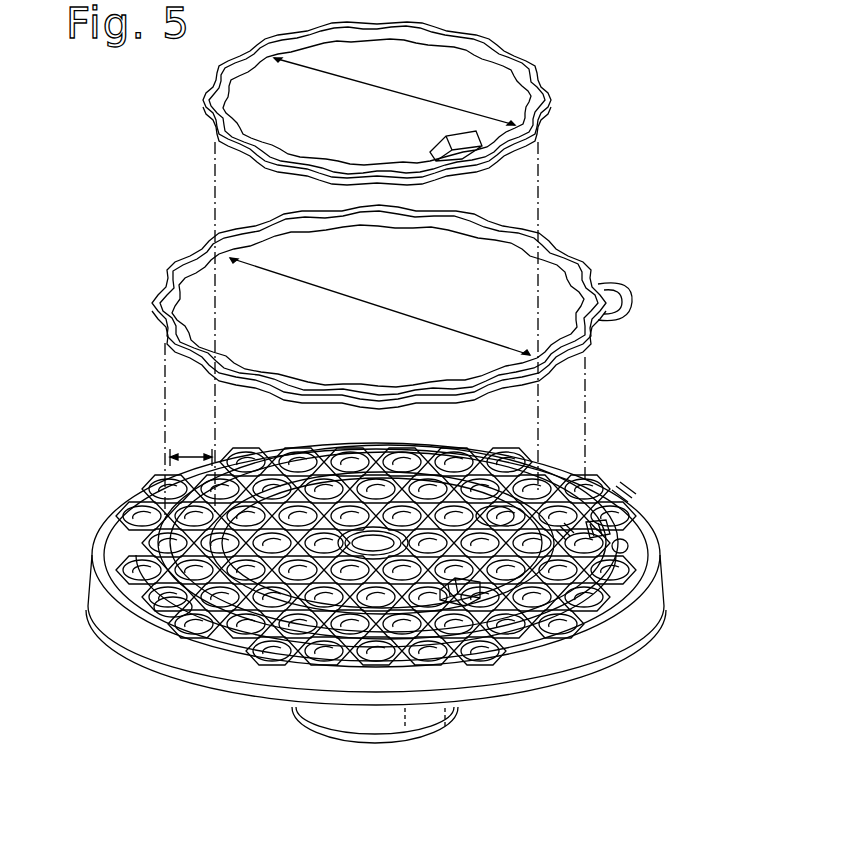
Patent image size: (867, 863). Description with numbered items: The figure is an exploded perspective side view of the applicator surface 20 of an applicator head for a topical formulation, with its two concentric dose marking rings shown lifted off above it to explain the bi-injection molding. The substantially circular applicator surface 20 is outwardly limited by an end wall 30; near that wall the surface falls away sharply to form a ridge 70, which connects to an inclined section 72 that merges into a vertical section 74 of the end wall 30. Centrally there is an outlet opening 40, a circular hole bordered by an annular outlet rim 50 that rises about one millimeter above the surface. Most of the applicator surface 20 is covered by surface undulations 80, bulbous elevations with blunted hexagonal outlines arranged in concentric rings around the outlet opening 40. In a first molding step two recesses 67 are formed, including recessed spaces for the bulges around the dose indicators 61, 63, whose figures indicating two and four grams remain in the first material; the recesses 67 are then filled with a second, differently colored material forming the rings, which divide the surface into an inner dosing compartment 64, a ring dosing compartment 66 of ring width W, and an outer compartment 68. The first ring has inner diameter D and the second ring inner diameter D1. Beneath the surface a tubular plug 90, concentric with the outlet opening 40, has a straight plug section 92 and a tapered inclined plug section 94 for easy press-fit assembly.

The applicator surface 20 is at (107, 558).
The end wall 30 is at (92, 590).
The outlet opening 40 is at (383, 547).
The outlet rim 50 is at (338, 540).
The first dose indicator 61 is at (470, 593).
The second dose indicator 63 is at (620, 546).
The inner dosing compartment 64 is at (493, 510).
The ring dosing compartment 66 is at (596, 530).
The recess 67 is at (558, 538).
The outer compartment 68 is at (620, 498).
The ridge 70 is at (603, 625).
The inclined section 72 is at (568, 655).
The vertical section 74 is at (533, 686).
The surface undulations 80 is at (173, 607).
The plug 90 is at (440, 736).
The straight plug section 92 is at (388, 720).
The inclined plug section 94 is at (368, 738).
The inner diameter of first dose marking D is at (412, 92).
The inner diameter of second dose marking D1 is at (388, 312).
The ring width W is at (188, 455).